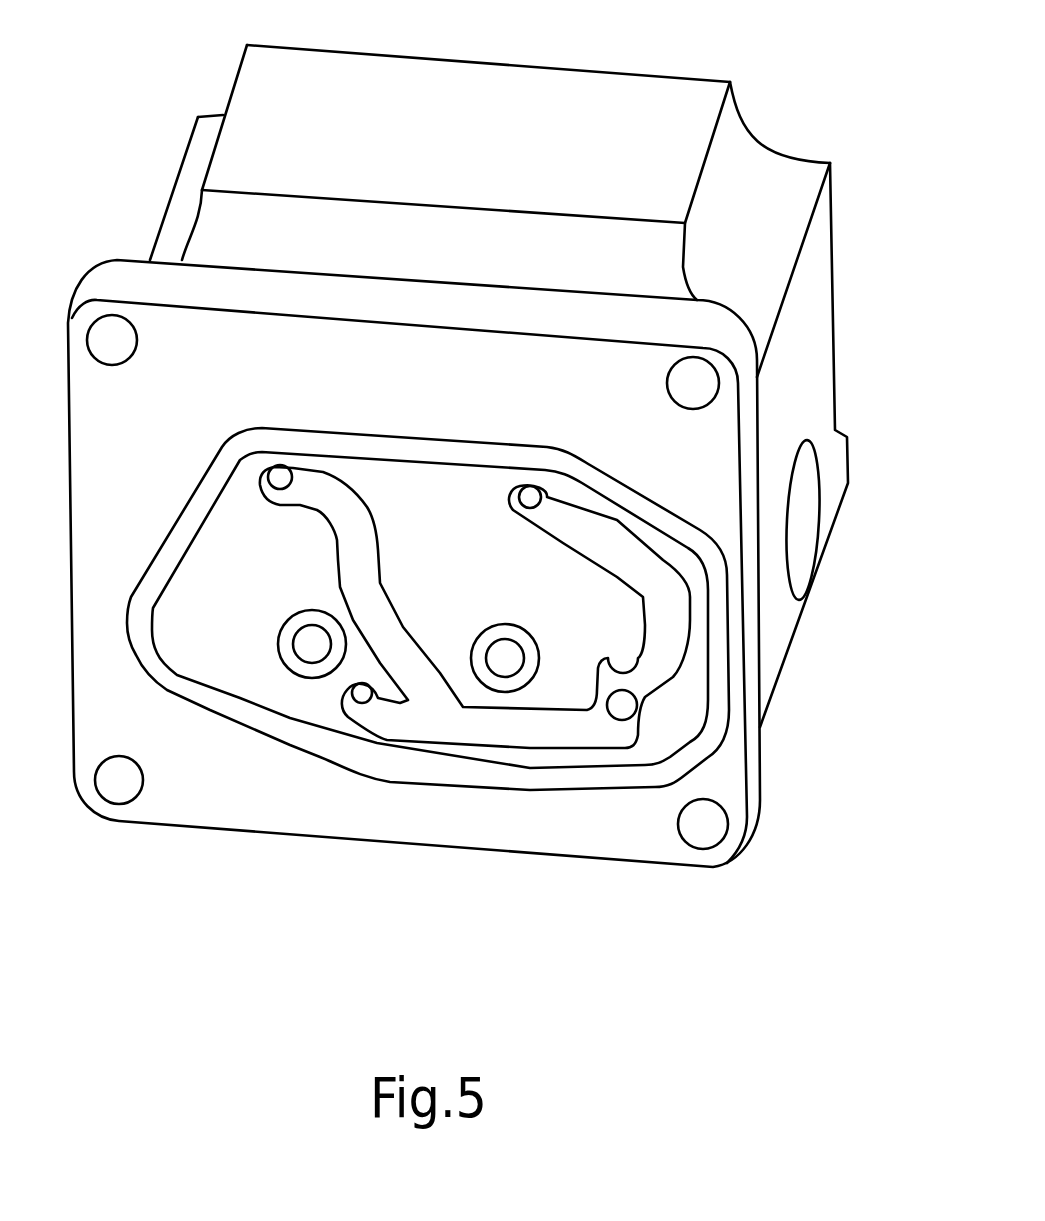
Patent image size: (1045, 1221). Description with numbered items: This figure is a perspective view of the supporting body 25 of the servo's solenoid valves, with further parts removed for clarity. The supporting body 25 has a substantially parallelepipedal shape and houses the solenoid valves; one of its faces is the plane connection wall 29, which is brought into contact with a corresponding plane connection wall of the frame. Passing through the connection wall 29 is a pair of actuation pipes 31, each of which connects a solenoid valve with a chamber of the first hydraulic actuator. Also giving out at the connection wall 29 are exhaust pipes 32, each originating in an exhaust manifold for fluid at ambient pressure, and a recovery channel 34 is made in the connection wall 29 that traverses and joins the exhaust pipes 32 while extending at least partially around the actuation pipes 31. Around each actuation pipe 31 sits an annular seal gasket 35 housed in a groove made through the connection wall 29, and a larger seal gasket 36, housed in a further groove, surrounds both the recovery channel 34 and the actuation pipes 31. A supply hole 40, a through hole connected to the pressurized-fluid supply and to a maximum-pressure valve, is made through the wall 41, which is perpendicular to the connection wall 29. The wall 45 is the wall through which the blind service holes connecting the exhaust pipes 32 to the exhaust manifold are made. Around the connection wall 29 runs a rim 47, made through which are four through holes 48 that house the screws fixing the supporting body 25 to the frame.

The supporting body 25 is at (305, 947).
The connection wall 29 is at (164, 785).
The actuation pipes 31 is at (312, 644).
The exhaust pipes 32 is at (363, 693).
The recovery channel 34 is at (488, 727).
The annular seal gasket 35 is at (293, 660).
The seal gasket 36 is at (717, 697).
The supply hole 40 is at (800, 516).
The wall 41 is at (827, 283).
The wall 45 is at (603, 93).
The rim 47 is at (115, 275).
The through holes 48 is at (117, 781).